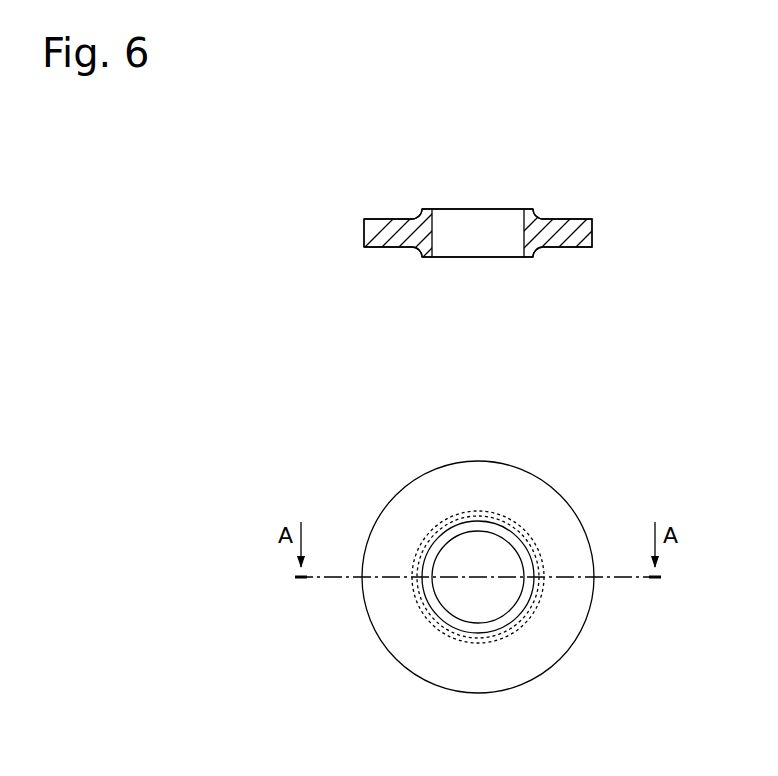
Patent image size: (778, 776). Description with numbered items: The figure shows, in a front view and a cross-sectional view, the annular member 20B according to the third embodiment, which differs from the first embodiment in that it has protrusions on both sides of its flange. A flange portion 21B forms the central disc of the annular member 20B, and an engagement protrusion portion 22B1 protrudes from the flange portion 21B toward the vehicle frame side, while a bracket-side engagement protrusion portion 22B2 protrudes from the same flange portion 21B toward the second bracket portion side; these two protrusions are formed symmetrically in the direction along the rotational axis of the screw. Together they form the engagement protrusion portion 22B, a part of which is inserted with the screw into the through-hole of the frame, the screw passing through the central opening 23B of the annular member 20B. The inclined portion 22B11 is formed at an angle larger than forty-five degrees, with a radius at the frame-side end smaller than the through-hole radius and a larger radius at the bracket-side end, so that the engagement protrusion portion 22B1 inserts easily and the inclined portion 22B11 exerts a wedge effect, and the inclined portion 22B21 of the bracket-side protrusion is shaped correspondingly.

The annular member 20B is at (478, 443).
The flange portion 21B is at (568, 220).
The engagement protrusion portion 22B is at (420, 393).
The engagement protrusion portion 22B1 is at (420, 288).
The inclined portion 22B11 is at (420, 265).
The bracket-side engagement protrusion portion 22B2 is at (420, 181).
The upper fillet / corner portion 22B21 is at (421, 206).
The through hole 23B is at (524, 243).